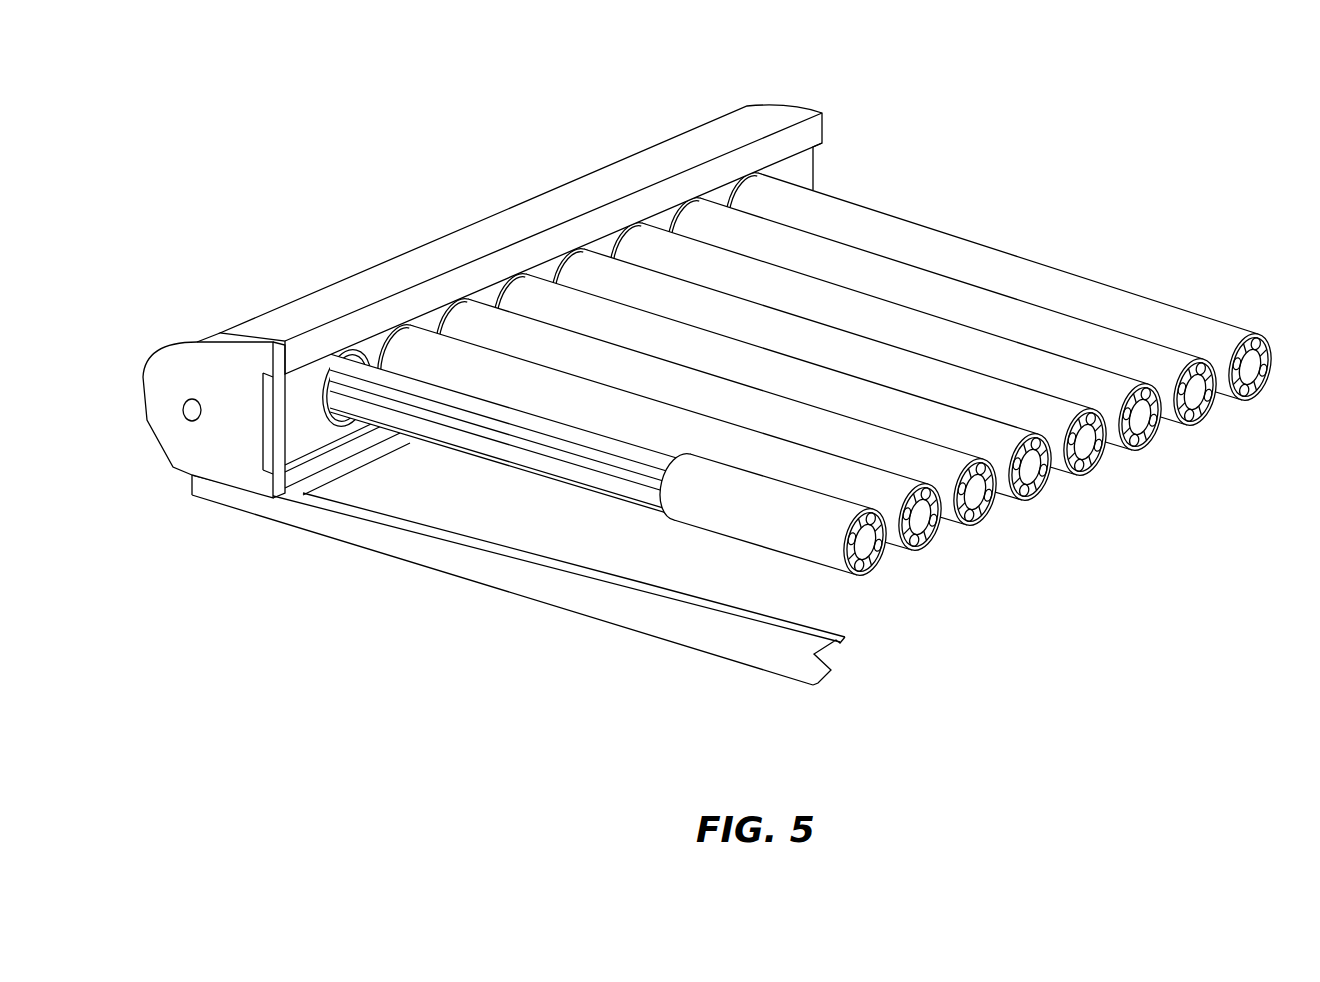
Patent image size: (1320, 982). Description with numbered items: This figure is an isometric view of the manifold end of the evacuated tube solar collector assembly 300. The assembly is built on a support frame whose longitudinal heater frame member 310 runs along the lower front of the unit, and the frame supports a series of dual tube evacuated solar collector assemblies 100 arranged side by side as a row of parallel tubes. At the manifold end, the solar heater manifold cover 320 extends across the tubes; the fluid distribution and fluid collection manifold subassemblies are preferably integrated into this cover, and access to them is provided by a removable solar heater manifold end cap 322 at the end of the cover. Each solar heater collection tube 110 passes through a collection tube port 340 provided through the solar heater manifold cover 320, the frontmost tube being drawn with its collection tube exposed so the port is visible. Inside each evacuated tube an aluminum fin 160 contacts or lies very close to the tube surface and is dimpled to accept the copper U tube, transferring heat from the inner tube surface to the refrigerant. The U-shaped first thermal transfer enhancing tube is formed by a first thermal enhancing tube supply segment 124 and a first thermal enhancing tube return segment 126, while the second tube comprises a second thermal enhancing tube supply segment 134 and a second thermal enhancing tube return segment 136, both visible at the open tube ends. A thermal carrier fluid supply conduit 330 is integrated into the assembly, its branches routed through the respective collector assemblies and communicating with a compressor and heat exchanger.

The dual tube evacuated solar collector assembly 100 is at (1030, 245).
The solar heater collection tube 110 is at (648, 488).
The first thermal enhancing tube supply segment 124 is at (455, 425).
The first thermal enhancing tube return segment 126 is at (888, 540).
The second thermal enhancing tube supply segment 134 is at (497, 407).
The second thermal enhancing tube return segment 136 is at (655, 493).
The aluminum fin 160 is at (620, 468).
The evacuated tube solar collector assembly 300 is at (355, 152).
The longitudinal heater frame member 310 is at (465, 565).
The solar heater manifold cover 320 is at (455, 248).
The solar heater manifold end cap 322 is at (220, 364).
The thermal carrier fluid supply conduit 330 is at (217, 412).
The collection tube port 340 is at (352, 363).